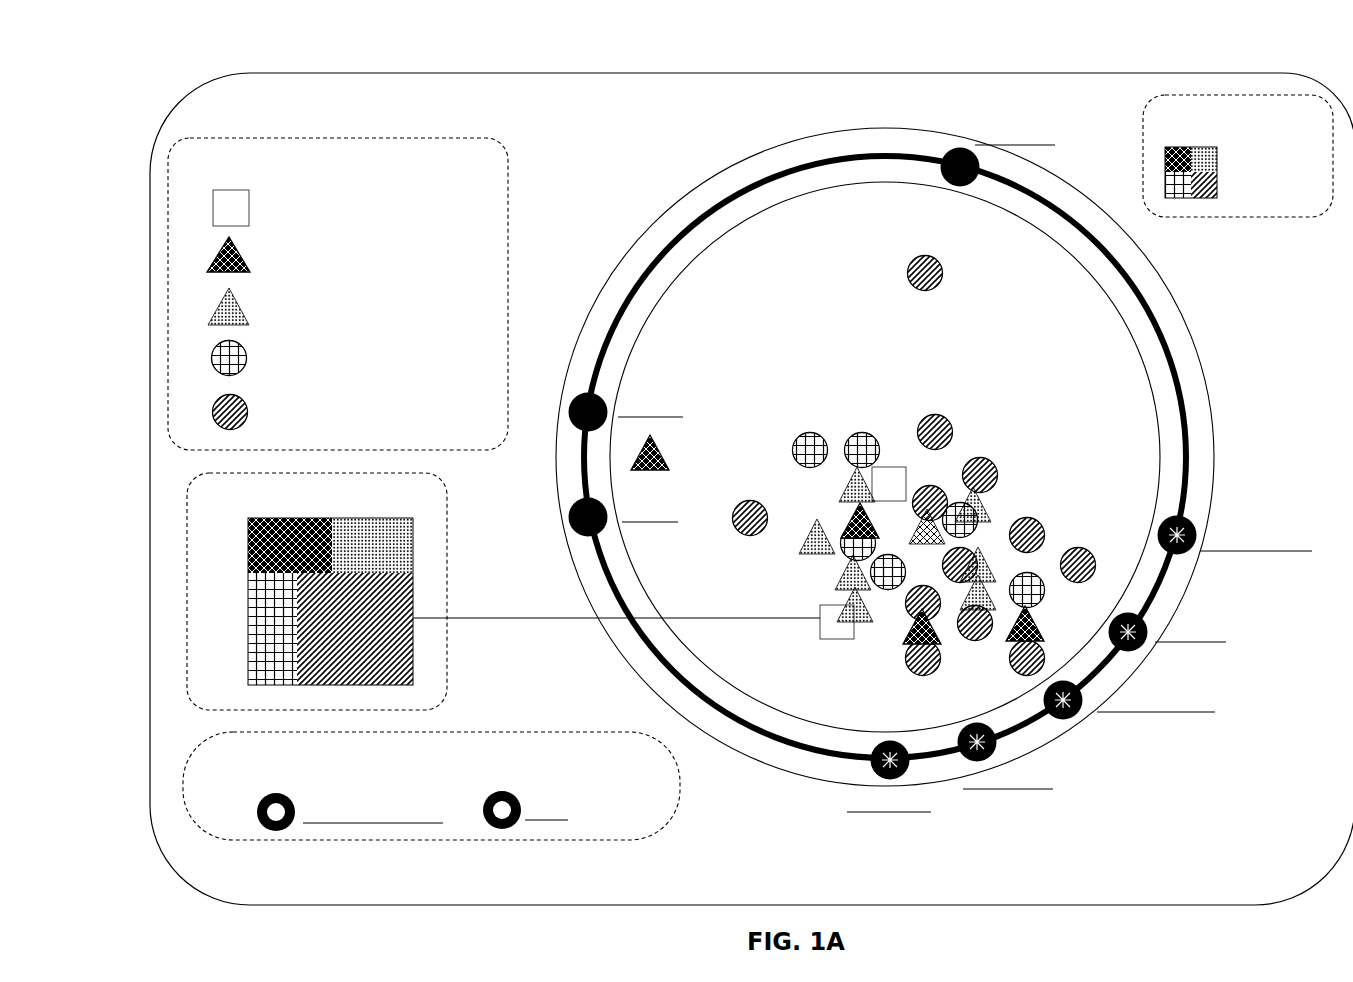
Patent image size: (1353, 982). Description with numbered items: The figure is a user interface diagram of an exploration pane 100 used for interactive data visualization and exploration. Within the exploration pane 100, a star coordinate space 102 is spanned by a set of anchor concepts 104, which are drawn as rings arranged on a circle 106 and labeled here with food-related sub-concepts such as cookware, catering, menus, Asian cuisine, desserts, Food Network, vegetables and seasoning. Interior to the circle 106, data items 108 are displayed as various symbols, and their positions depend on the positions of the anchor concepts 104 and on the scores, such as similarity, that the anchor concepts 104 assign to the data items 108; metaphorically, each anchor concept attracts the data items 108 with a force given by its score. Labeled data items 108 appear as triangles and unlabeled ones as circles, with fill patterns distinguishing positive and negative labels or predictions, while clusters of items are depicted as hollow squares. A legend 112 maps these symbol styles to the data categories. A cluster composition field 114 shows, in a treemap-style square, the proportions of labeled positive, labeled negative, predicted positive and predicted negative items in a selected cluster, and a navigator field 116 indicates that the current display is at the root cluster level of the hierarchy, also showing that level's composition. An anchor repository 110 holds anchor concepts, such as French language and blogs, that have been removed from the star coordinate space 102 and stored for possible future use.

The exploration pane 100 is at (1115, 73).
The star coordinate space 102 is at (710, 148).
The anchor concepts 104 is at (958, 148).
The circle 106 is at (1168, 348).
The data items 108 is at (1040, 472).
The anchor repository 110 is at (510, 732).
The legend 112 is at (475, 138).
The cluster composition field 114 is at (448, 498).
The navigator field 116 is at (1237, 217).